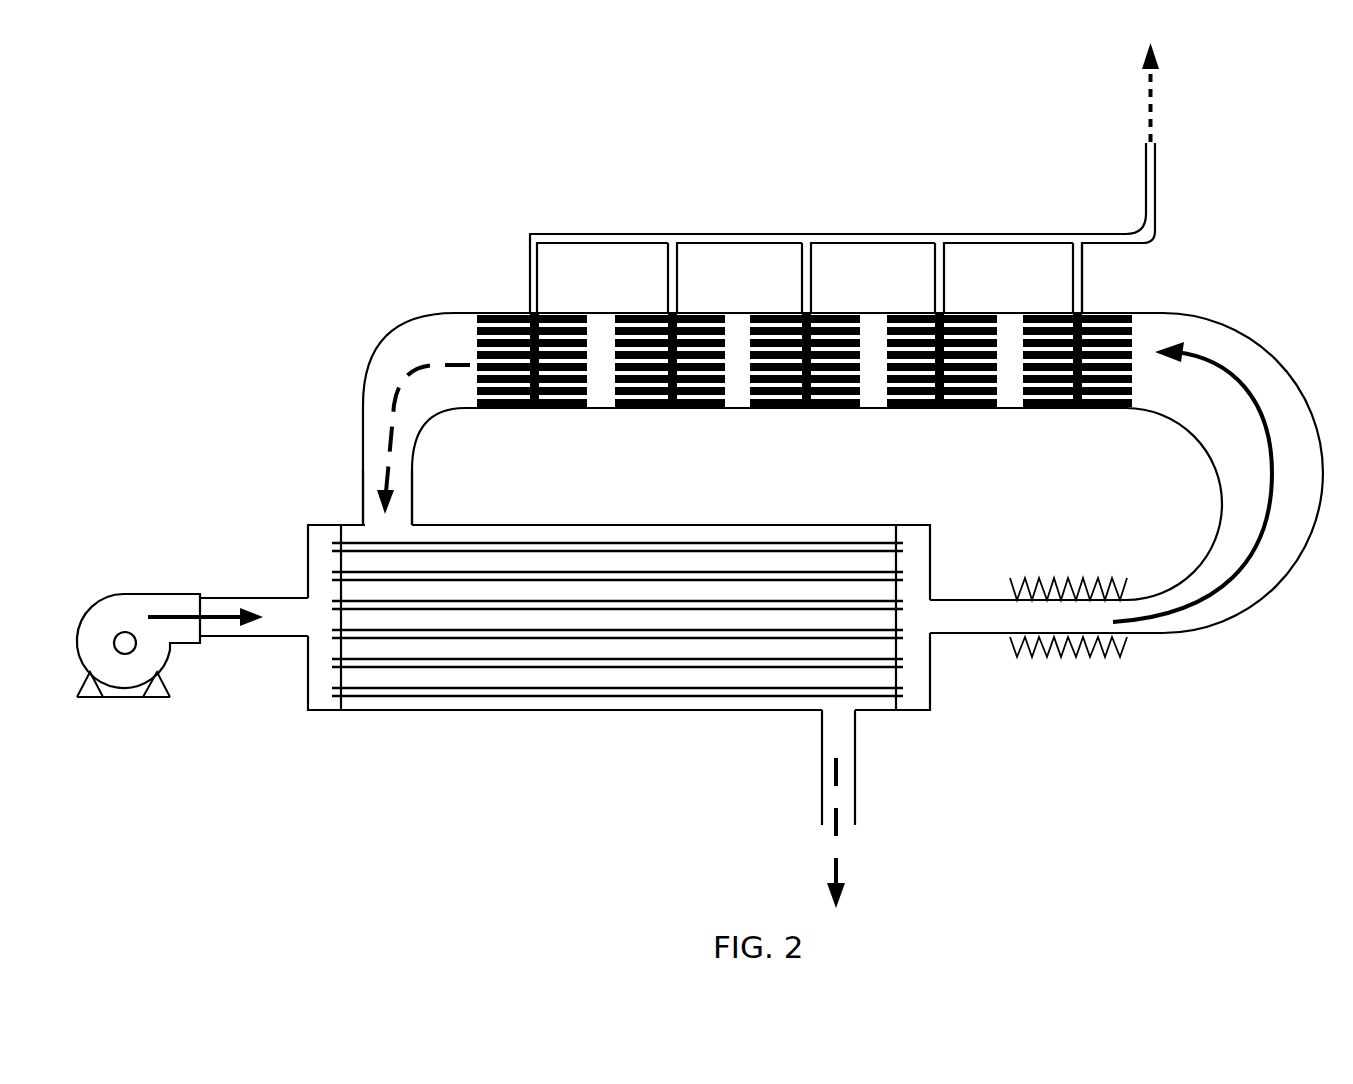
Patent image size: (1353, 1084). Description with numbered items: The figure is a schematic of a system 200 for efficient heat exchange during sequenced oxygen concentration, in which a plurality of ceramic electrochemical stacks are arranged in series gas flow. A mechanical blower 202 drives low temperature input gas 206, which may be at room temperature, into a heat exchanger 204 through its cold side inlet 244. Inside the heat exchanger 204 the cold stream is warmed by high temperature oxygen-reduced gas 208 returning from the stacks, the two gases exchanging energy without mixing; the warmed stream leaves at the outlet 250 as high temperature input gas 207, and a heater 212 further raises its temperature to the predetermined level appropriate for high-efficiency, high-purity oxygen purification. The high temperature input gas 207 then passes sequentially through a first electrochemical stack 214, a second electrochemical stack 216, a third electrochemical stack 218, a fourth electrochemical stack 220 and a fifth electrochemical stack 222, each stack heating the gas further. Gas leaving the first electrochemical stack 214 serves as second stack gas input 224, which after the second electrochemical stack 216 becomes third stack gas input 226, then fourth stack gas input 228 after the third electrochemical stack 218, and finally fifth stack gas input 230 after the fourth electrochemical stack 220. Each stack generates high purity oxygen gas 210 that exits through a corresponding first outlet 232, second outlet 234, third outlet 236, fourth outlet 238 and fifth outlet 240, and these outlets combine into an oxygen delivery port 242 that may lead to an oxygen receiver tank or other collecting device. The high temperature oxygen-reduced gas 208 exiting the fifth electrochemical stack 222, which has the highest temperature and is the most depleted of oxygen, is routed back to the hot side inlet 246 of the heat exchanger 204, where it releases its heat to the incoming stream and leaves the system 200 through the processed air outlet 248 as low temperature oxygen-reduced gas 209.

The system 200 is at (298, 145).
The mechanical blower 202 is at (147, 672).
The heat exchanger 204 is at (475, 712).
The low temperature input gas 206 is at (173, 615).
The high temperature input gas 207 is at (1224, 360).
The high temperature oxygen-reduced gas 208 is at (418, 370).
The low temperature oxygen-reduced gas 209 is at (835, 832).
The high purity oxygen gas 210 is at (1152, 107).
The heater 212 is at (1060, 657).
The first electrochemical stack 214 is at (1098, 407).
The second electrochemical stack 216 is at (968, 407).
The third electrochemical stack 218 is at (838, 407).
The fourth electrochemical stack 220 is at (705, 407).
The fifth electrochemical stack 222 is at (565, 407).
The second stack gas input 224 is at (1013, 330).
The third stack gas input 226 is at (873, 330).
The fourth stack gas input 228 is at (736, 330).
The fifth stack gas input 230 is at (604, 330).
The first outlet 232 is at (1077, 258).
The second outlet 234 is at (938, 258).
The third outlet 236 is at (805, 262).
The fourth outlet 238 is at (670, 263).
The fifth outlet 240 is at (532, 263).
The oxygen delivery port 242 is at (1148, 193).
The cold side inlet 244 is at (305, 613).
The hot side inlet 246 is at (380, 530).
The processed air outlet 248 is at (838, 728).
The outlet 250 is at (922, 625).